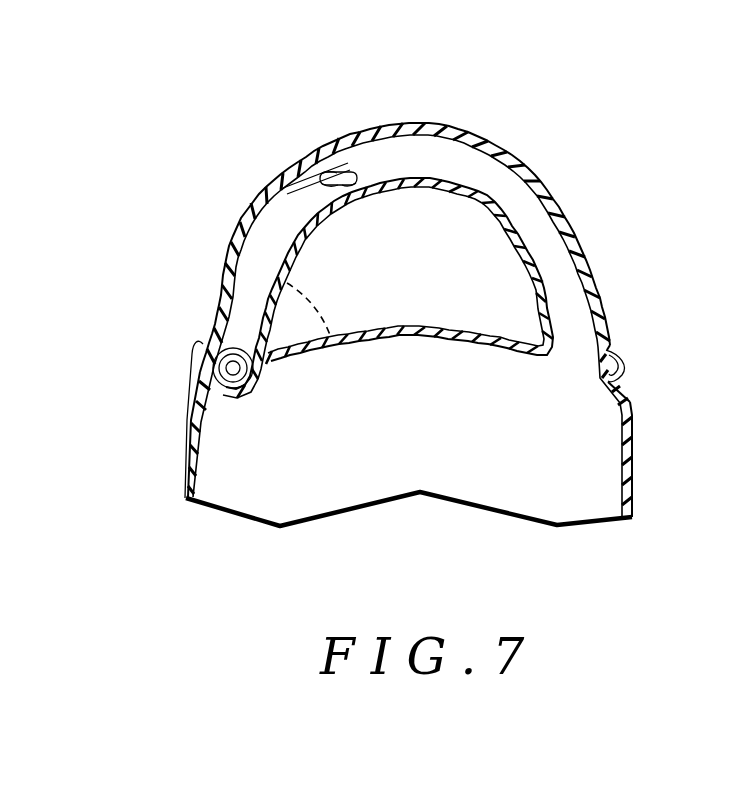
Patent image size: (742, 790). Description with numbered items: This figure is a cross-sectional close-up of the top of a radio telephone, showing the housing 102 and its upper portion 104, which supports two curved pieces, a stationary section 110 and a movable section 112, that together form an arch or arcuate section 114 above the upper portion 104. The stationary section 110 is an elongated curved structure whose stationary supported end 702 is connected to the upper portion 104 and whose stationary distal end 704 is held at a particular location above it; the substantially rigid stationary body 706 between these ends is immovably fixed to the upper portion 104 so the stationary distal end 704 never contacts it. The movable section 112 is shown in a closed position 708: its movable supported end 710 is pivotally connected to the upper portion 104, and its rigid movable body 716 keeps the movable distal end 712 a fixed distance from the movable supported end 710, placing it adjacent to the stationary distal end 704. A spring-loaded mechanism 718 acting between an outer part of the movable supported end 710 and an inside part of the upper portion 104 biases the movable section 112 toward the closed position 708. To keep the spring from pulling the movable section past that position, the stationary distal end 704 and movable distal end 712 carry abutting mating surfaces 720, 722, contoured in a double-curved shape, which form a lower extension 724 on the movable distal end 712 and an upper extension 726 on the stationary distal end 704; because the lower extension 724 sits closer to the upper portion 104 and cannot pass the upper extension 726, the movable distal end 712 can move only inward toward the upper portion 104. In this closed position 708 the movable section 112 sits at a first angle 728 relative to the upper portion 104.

The housing 102 is at (463, 433).
The upper portion 104 is at (578, 431).
The stationary section 110 is at (414, 249).
The movable section 112 is at (414, 249).
The arcuate section 114 is at (660, 301).
The stationary supported end 702 is at (590, 333).
The stationary distal end 704 is at (361, 165).
The stationary body 706 is at (578, 227).
The closed position 708 is at (351, 238).
The movable supported end 710 is at (233, 369).
The movable distal end 712 is at (303, 185).
The movable body 716 is at (243, 250).
The spring-loaded mechanism 718 is at (231, 390).
The abutting mating surface 720 is at (343, 175).
The abutting mating surface 722 is at (325, 186).
The lower extension 724 is at (350, 185).
The upper extension 726 is at (322, 174).
The first angle 728 is at (320, 299).